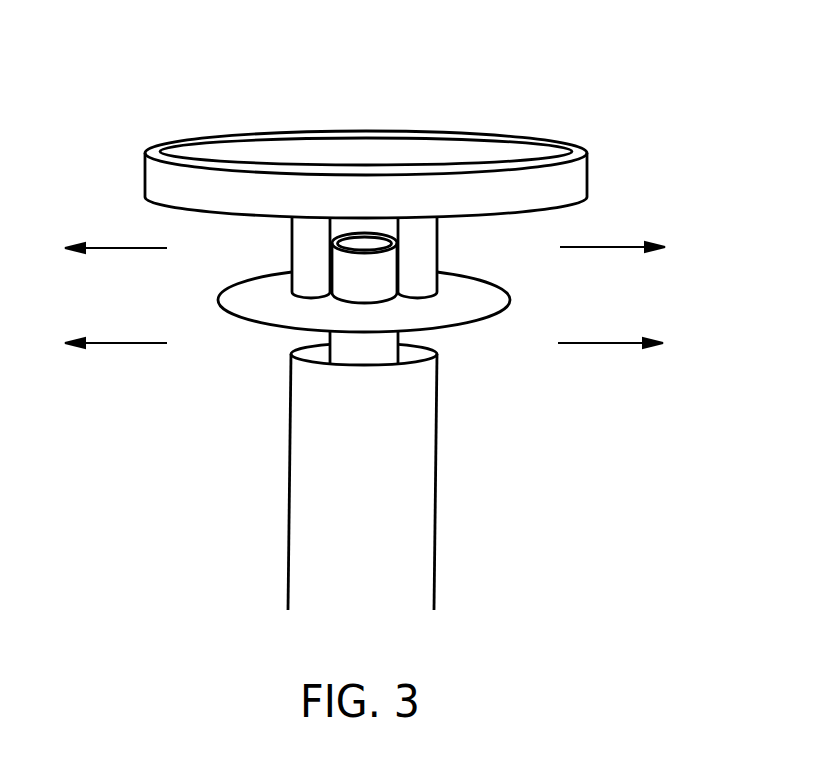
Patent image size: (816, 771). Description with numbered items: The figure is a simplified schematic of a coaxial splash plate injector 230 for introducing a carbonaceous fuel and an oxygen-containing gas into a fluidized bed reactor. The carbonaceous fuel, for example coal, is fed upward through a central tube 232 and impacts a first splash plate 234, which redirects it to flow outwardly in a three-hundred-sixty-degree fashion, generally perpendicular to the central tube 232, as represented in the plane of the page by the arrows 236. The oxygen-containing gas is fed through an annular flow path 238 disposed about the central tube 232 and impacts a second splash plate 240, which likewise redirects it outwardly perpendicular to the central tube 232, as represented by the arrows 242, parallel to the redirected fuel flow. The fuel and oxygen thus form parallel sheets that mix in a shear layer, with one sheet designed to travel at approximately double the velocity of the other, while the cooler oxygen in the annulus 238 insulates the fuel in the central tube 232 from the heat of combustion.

The coaxial splash plate injector 230 is at (395, 311).
The central tube 232 is at (360, 243).
The first splash plate 234 is at (143, 174).
The arrows 236 is at (127, 250).
The annular flow path 238 is at (313, 352).
The second splash plate 240 is at (445, 328).
The arrows 242 is at (127, 345).